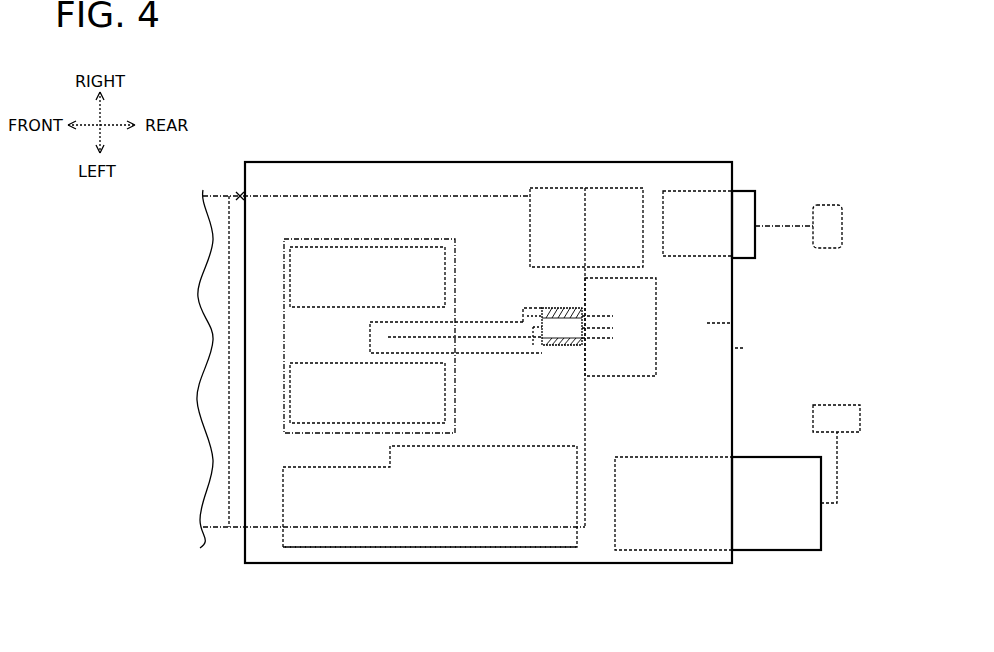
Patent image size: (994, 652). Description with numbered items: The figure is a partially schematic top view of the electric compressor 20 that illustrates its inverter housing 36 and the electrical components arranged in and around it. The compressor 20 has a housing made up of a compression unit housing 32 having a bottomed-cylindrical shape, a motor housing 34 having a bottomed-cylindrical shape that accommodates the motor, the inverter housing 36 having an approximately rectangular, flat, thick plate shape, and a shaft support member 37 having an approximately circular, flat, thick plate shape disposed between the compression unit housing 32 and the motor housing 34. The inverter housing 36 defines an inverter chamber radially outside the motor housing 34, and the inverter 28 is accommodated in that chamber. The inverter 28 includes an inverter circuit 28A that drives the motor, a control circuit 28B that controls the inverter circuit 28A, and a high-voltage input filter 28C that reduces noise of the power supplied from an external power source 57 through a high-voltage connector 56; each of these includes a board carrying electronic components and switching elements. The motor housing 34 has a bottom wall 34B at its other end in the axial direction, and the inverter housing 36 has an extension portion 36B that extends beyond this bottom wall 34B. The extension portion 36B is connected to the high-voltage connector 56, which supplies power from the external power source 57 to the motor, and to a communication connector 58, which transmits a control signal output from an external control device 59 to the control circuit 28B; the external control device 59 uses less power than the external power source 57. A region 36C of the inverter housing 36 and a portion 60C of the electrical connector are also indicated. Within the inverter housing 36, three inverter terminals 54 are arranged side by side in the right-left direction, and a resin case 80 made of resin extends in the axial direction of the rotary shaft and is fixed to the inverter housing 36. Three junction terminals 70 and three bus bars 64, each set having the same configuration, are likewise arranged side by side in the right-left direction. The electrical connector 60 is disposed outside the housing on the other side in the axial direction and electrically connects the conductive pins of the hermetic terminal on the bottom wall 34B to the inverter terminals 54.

The compressor 20 is at (743, 148).
The inverter 28 is at (500, 175).
The inverter circuit 28A is at (400, 196).
The control circuit 28B is at (597, 190).
The high-voltage input filter 28C is at (430, 548).
The compression unit housing 32 is at (220, 308).
The motor housing 34 is at (335, 527).
The bottom wall 34B is at (585, 410).
The inverter housing 36 is at (342, 175).
The extension portion 36B is at (707, 323).
The board portion 36C is at (735, 348).
The shaft support member 37 is at (240, 196).
The inverter terminals 54 is at (497, 354).
The high-voltage connector 56 is at (747, 467).
The external power source 57 is at (845, 412).
The communication connector 58 is at (747, 222).
The external control device 59 is at (818, 246).
The electrical connector 60 is at (662, 352).
The connector housing 60C is at (655, 313).
The bus bars 64 is at (592, 340).
The junction terminals 70 is at (550, 346).
The resin case 80 is at (513, 354).